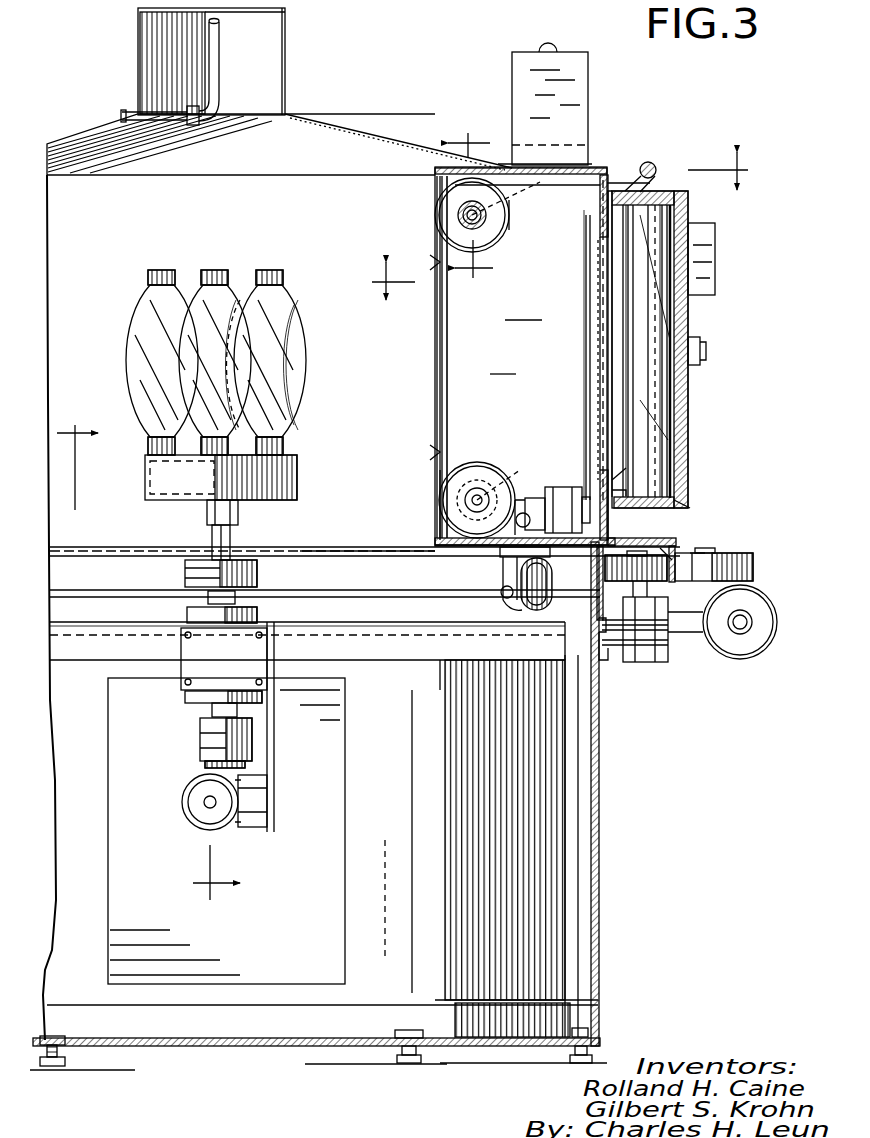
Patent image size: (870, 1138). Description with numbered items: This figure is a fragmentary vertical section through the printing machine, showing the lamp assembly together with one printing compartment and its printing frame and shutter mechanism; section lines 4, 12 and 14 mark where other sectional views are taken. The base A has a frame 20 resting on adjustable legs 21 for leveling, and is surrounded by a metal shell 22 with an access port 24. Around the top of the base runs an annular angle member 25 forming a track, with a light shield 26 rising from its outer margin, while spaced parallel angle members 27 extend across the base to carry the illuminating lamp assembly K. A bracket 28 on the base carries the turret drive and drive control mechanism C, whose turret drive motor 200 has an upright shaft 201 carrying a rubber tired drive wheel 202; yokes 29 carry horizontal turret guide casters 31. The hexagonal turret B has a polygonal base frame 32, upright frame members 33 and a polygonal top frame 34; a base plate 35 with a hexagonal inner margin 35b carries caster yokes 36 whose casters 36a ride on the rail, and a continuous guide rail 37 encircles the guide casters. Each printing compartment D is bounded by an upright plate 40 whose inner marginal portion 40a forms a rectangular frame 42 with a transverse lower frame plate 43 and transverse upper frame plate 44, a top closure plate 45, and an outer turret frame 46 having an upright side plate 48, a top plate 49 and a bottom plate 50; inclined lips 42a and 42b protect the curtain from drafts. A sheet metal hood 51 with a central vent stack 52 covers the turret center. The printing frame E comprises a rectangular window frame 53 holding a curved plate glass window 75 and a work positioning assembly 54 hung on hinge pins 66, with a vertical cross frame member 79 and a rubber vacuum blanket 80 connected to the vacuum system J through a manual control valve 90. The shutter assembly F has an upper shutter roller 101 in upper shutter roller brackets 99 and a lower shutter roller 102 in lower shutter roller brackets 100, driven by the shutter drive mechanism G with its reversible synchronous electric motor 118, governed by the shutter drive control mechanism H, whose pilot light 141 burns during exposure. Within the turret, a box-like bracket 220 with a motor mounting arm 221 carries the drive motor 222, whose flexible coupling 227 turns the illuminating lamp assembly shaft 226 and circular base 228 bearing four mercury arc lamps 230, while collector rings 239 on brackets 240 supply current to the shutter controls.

The base A is at (597, 823).
The hexagonal turret B is at (368, 128).
The turret drive and drive control mechanism C is at (735, 548).
The printing compartment D is at (525, 357).
The printing frame E is at (693, 317).
The shutter assembly F is at (508, 237).
The shutter drive mechanism G is at (537, 478).
The shutter drive control mechanism H is at (512, 56).
The vacuum system J is at (218, 40).
The illuminating lamp assembly K is at (210, 252).
The section line 4- 4 is at (566, 226).
The section line 12- 12 is at (470, 204).
The section line 14- 14 is at (148, 662).
The frame 20 is at (476, 1000).
The adjustable legs 21 is at (62, 1057).
The metal shell 22 is at (599, 752).
The access port 24 is at (328, 768).
The annular angle member 25 is at (578, 623).
The light shield 26 is at (68, 578).
The spaced parallel angle members 27 is at (442, 656).
The bracket 28 is at (655, 660).
The yokes 29 is at (617, 648).
The horizontal turret guide casters 31 is at (676, 548).
The polygonal base frame 32 is at (592, 557).
The upright frame members 33 is at (590, 382).
The polygonal top frame 34 is at (595, 165).
The base plate 35 is at (620, 546).
The hexagonal inner margin 35b is at (463, 535).
The caster yokes 36 is at (500, 570).
The casters 36a is at (503, 605).
The continuous guide rail 37 is at (690, 556).
The upright plate 40 is at (523, 309).
The inner marginal portion 40a is at (433, 388).
The rectangular frame 42 is at (432, 195).
The inclined lip 42a is at (430, 266).
The inclined lip 42b is at (430, 455).
The transverse lower frame plate 43 is at (435, 485).
The transverse upper frame plate 44 is at (433, 222).
The top closure plate 45 is at (505, 165).
The outer turret frame 46 is at (598, 408).
The upright turret frame side plate 48 is at (606, 328).
The turret frame top plate 49 is at (606, 210).
The turret frame bottom plate 50 is at (612, 483).
The sheet metal hood 51 is at (302, 118).
The central vent stack 52 is at (287, 47).
The rectangular window frame 53 is at (622, 498).
The work positioning assembly 54 is at (688, 205).
The hinge pins 66 is at (653, 162).
The curved plate glass window 75 is at (675, 352).
The vertical cross frame member 79 is at (682, 510).
The rubber vacuum blanket 80 is at (672, 262).
The manual control valve 90 is at (705, 355).
The upper shutter roller brackets 99 is at (485, 197).
The lower shutter roller brackets 100 is at (435, 541).
The upper shutter roller 101 is at (490, 252).
The lower shutter roller 102 is at (492, 460).
The reversible synchronous electric motor 118 is at (548, 488).
The pilot light 141 is at (553, 45).
The turret drive motor 200 is at (755, 660).
The upright shaft 201 is at (720, 554).
The rubber tired drive wheel 202 is at (753, 566).
The box-like bracket 220 is at (188, 648).
The motor mounting arm 221 is at (270, 802).
The drive motor 222 is at (190, 812).
The illuminating lamp assembly shaft 226 is at (232, 545).
The flexible coupling 227 is at (200, 735).
The circular base 228 is at (297, 480).
The mercury arc lamps 230 is at (163, 270).
The collector rings 239 is at (260, 572).
The brackets 240 is at (138, 545).